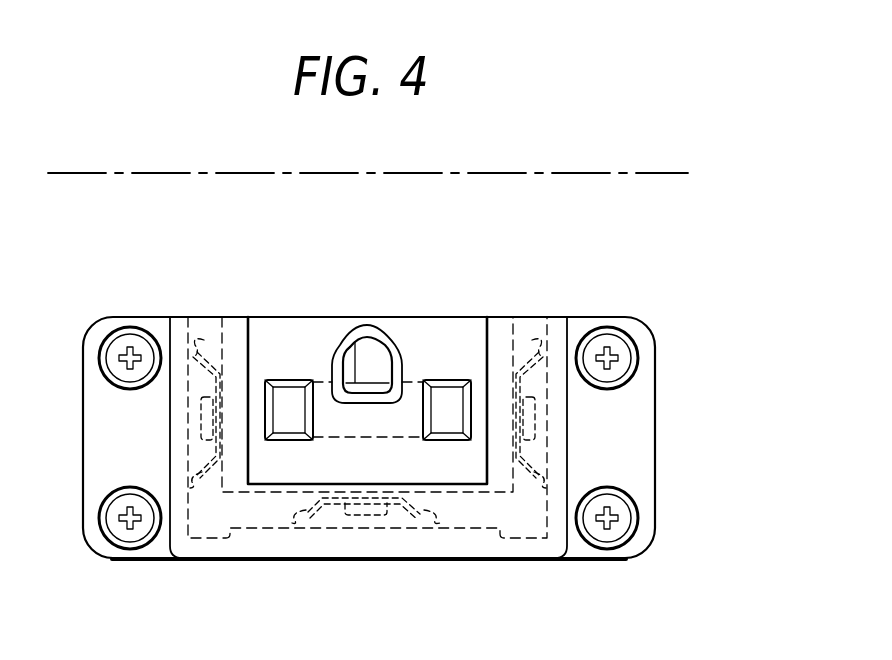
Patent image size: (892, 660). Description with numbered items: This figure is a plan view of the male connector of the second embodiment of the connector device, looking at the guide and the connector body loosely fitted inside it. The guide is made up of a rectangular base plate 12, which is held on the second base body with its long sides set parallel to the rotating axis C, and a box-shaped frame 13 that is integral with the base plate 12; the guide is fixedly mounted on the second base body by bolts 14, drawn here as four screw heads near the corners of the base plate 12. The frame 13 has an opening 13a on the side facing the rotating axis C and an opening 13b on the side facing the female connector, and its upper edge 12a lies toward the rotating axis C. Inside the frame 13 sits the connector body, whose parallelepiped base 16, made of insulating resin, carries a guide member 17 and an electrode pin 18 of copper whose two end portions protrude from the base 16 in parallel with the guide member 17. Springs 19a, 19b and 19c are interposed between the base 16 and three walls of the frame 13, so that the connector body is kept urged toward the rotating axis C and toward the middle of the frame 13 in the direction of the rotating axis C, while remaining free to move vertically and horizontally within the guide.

The base plate 12 is at (622, 425).
The upper edge of mounting plate 12a is at (460, 317).
The frame 13 is at (235, 352).
The opening 13a is at (365, 298).
The opening 13b is at (298, 343).
The bolts 14 is at (120, 343).
The base 16 is at (250, 492).
The guide member 17 is at (373, 358).
The electrode pin 18 is at (292, 427).
The spring 19a is at (417, 507).
The spring 19b is at (203, 483).
The spring 19c is at (542, 487).
The rotating axis C is at (627, 175).